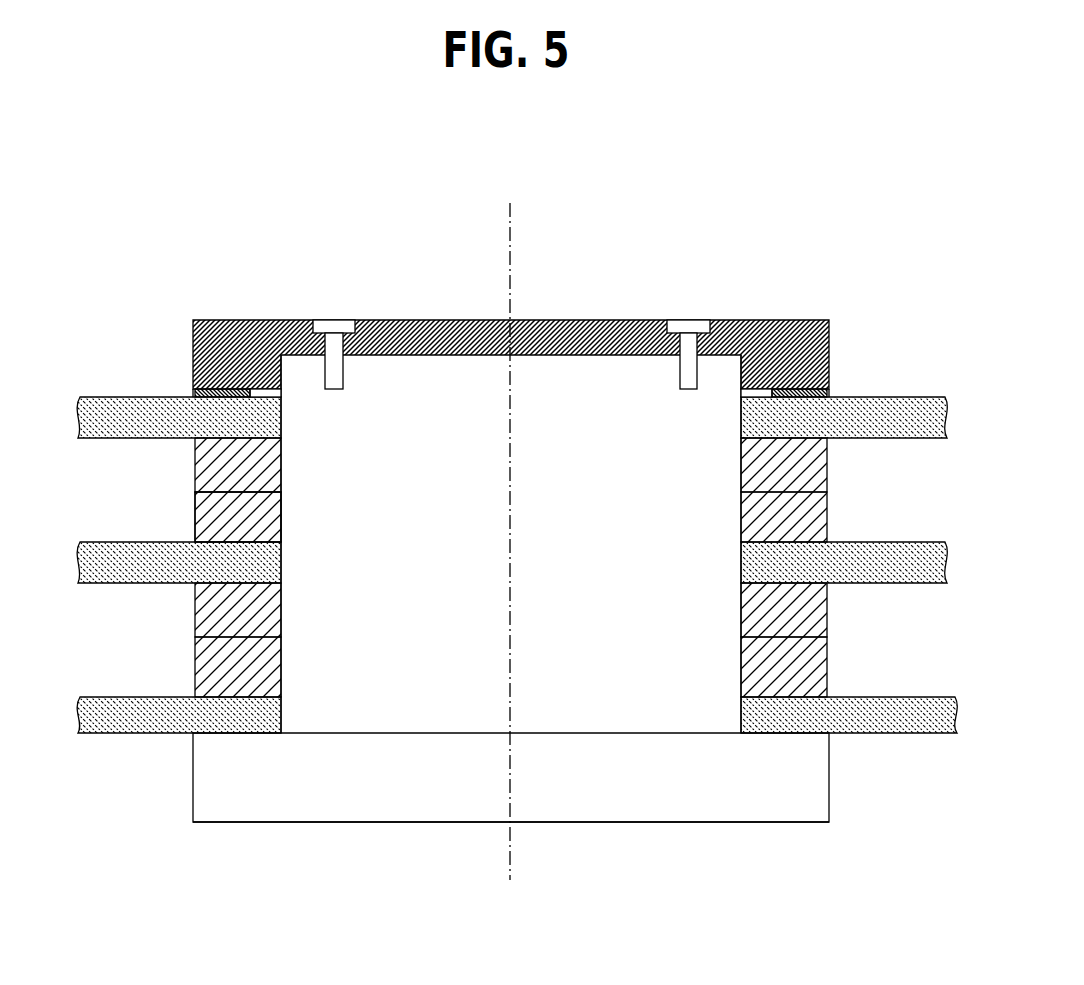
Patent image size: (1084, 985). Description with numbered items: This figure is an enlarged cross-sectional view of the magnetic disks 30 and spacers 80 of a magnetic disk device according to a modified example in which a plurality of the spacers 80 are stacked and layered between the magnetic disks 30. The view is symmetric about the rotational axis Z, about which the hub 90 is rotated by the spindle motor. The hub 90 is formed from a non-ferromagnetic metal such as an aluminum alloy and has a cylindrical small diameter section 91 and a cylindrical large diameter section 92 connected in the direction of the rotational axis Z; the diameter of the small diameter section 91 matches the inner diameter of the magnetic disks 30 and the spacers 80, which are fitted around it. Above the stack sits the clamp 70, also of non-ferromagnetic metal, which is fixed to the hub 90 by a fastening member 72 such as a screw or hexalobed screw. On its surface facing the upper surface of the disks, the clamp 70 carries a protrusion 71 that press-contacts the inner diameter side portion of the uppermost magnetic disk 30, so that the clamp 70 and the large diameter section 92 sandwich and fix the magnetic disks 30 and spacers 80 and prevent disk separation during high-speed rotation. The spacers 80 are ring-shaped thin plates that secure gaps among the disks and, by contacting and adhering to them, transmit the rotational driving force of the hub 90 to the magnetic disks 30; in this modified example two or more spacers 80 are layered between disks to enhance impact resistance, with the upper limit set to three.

The magnetic disk 30 is at (108, 395).
The clamp 70 is at (262, 320).
The protrusion 71 is at (829, 393).
The fastening member 72 is at (333, 320).
The spacer 80 is at (827, 518).
The hub 90 is at (412, 822).
The small diameter section 91 is at (281, 513).
The large diameter section 92 is at (192, 780).
The rotational axis Z is at (510, 253).